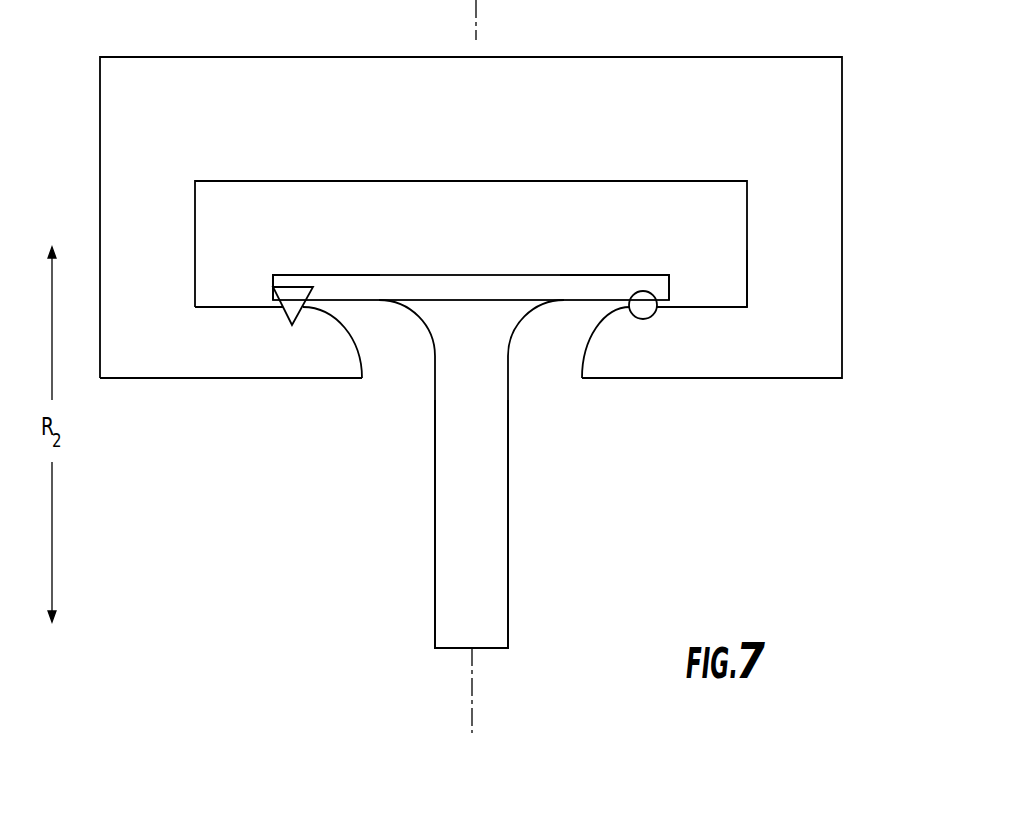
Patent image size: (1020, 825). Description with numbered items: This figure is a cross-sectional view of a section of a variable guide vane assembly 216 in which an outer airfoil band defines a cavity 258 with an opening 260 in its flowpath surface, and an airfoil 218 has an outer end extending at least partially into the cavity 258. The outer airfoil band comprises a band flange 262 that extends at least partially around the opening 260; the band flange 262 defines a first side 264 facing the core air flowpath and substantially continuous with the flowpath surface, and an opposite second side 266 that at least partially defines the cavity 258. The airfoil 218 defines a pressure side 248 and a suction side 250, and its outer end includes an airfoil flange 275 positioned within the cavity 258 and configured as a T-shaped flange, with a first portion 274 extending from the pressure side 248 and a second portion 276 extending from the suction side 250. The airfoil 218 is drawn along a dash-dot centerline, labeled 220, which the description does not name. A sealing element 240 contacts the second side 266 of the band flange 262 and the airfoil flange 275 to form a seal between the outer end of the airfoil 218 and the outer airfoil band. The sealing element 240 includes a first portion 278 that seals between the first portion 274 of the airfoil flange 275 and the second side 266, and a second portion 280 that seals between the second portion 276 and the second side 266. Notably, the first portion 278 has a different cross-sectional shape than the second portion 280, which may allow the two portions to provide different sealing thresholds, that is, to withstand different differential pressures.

The variable guide vane assembly 216 is at (860, 127).
The airfoil 218 is at (492, 568).
The axis 220 is at (475, 692).
The sealing element 240 is at (498, 380).
The pressure side 248 is at (630, 608).
The suction side 250 is at (323, 583).
The cavity 258 is at (227, 211).
The opening 260 is at (392, 376).
The band flange 262 is at (236, 364).
The first side 264 is at (728, 378).
The second side 266 is at (713, 305).
The first portion 274 is at (600, 280).
The airfoil flange 275 is at (513, 257).
The second portion 276 is at (334, 286).
The first portion 278 is at (647, 309).
The second portion 280 is at (288, 312).